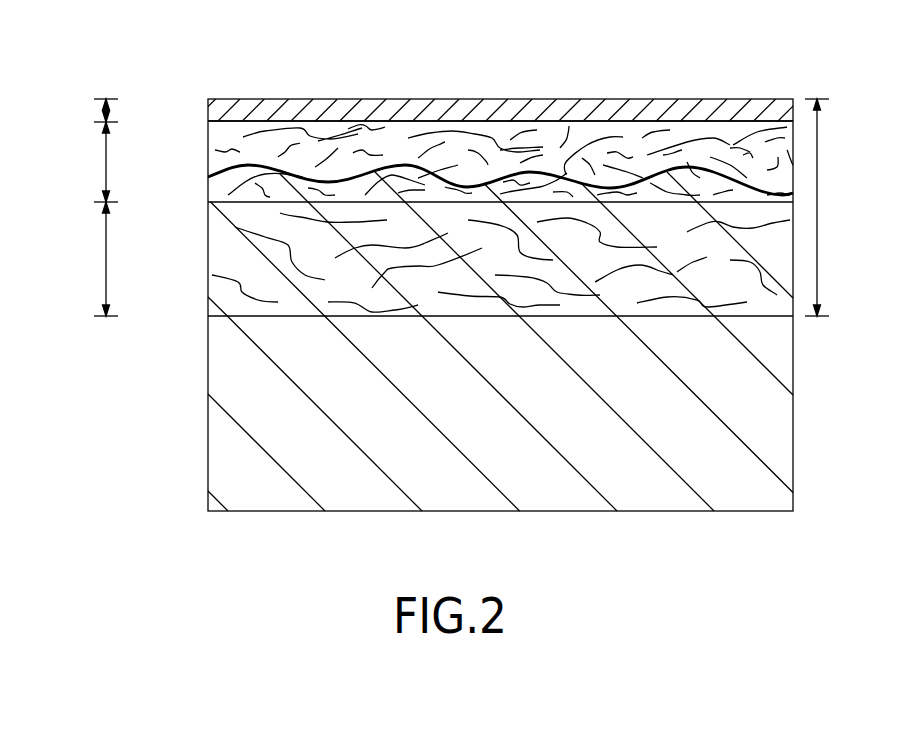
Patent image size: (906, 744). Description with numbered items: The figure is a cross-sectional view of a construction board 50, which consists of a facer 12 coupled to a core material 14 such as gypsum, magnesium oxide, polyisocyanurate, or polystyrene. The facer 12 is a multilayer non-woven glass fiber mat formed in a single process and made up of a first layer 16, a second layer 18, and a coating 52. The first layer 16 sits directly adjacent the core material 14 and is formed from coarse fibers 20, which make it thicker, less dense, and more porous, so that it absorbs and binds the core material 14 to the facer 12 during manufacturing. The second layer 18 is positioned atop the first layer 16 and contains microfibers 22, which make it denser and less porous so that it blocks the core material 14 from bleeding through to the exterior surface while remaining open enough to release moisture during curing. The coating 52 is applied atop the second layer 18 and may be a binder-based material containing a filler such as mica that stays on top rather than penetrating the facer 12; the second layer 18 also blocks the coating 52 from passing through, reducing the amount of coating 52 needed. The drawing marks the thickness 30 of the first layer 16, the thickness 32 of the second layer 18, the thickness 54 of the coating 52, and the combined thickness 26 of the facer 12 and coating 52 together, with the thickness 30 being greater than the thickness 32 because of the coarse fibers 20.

The construction board 50 is at (128, 67).
The coating 52 is at (278, 98).
The thickness of the coating 54 is at (103, 107).
The second layer 18 is at (207, 147).
The facer 12 is at (472, 213).
The thickness of the second layer 32 is at (106, 165).
The thickness of the first layer 30 is at (106, 277).
The first layer 16 is at (208, 298).
The core material 14 is at (208, 422).
The coarse fibers 20 is at (725, 143).
The microfibers 22 is at (653, 133).
The combined thickness 26 is at (817, 234).